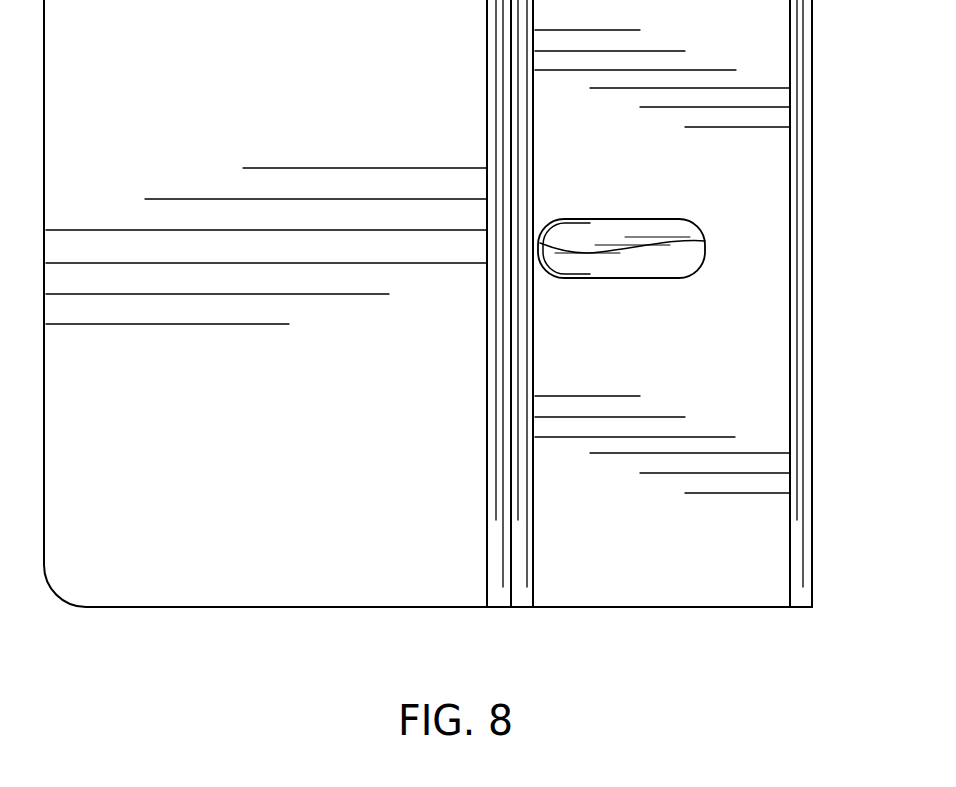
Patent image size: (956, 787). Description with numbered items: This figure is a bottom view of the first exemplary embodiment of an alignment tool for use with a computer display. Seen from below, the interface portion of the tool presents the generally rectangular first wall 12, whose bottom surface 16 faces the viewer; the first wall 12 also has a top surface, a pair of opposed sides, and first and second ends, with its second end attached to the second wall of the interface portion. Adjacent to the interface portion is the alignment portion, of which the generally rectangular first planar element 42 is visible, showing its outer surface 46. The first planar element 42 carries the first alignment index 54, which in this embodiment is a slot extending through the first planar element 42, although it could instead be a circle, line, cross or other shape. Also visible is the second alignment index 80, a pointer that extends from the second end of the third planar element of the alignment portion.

The first wall 12 is at (156, 607).
The bottom surface 16 is at (285, 590).
The first planar element 42 is at (793, 510).
The outer surface 46 is at (770, 571).
The first alignment index 54 is at (627, 278).
The second alignment index 80 is at (705, 241).